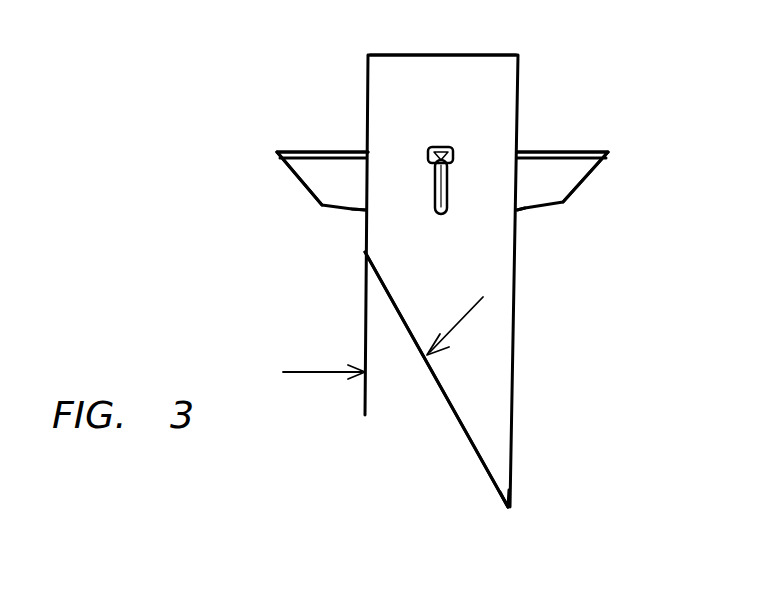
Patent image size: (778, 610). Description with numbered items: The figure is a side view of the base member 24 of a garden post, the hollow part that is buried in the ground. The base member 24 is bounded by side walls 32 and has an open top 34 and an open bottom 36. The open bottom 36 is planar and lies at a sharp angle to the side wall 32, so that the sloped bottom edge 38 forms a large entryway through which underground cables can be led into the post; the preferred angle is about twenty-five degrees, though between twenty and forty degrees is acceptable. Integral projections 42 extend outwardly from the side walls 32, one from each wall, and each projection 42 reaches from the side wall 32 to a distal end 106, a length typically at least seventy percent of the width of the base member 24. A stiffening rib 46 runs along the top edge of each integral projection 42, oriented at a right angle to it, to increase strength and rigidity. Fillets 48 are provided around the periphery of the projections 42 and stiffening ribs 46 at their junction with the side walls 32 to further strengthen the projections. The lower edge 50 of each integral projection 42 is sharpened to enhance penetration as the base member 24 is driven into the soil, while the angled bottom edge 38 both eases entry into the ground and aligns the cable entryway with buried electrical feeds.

The base member 24 is at (140, 286).
The side wall 32 is at (501, 109).
The open top 34 is at (496, 55).
The open bottom 36 is at (505, 505).
The bottom edge 38 is at (453, 413).
The integral projection 42 is at (307, 177).
The stiffening rib 46 is at (325, 150).
The fillet 48 is at (449, 157).
The lower edge 50 is at (356, 213).
The distal end 106 is at (277, 152).